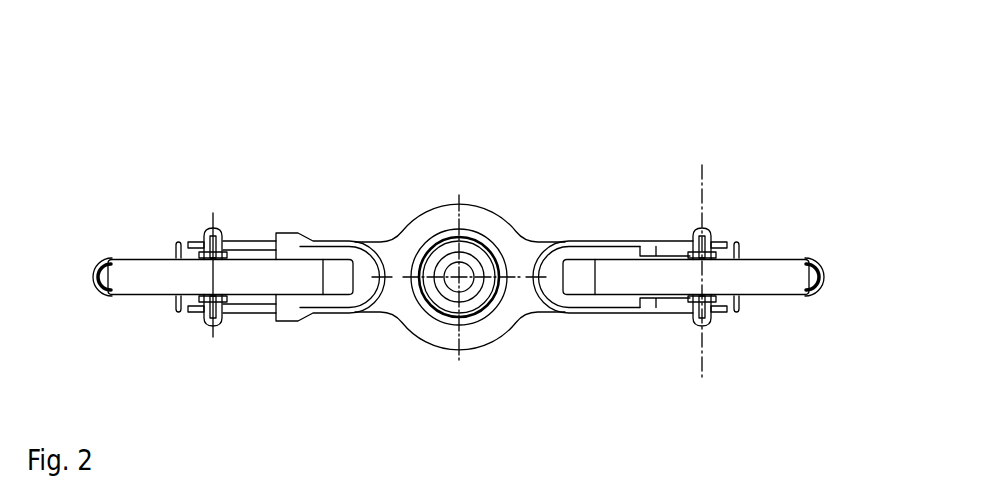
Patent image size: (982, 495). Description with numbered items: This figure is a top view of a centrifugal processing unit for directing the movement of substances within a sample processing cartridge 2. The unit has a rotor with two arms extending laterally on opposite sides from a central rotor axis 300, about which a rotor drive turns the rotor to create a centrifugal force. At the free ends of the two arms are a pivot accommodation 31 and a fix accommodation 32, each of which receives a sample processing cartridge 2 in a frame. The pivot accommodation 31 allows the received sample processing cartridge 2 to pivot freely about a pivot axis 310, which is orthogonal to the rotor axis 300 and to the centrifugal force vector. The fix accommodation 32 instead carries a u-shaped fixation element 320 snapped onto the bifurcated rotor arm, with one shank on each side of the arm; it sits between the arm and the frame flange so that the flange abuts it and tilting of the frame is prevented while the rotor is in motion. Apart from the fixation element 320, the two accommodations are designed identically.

The sample processing cartridge 2 is at (137, 270).
The fix accommodation 32 is at (247, 208).
The fixation element 320 is at (327, 250).
The rotor axis 300 is at (463, 275).
The pivot axis 310 is at (702, 180).
The pivot accommodation 31 is at (718, 208).